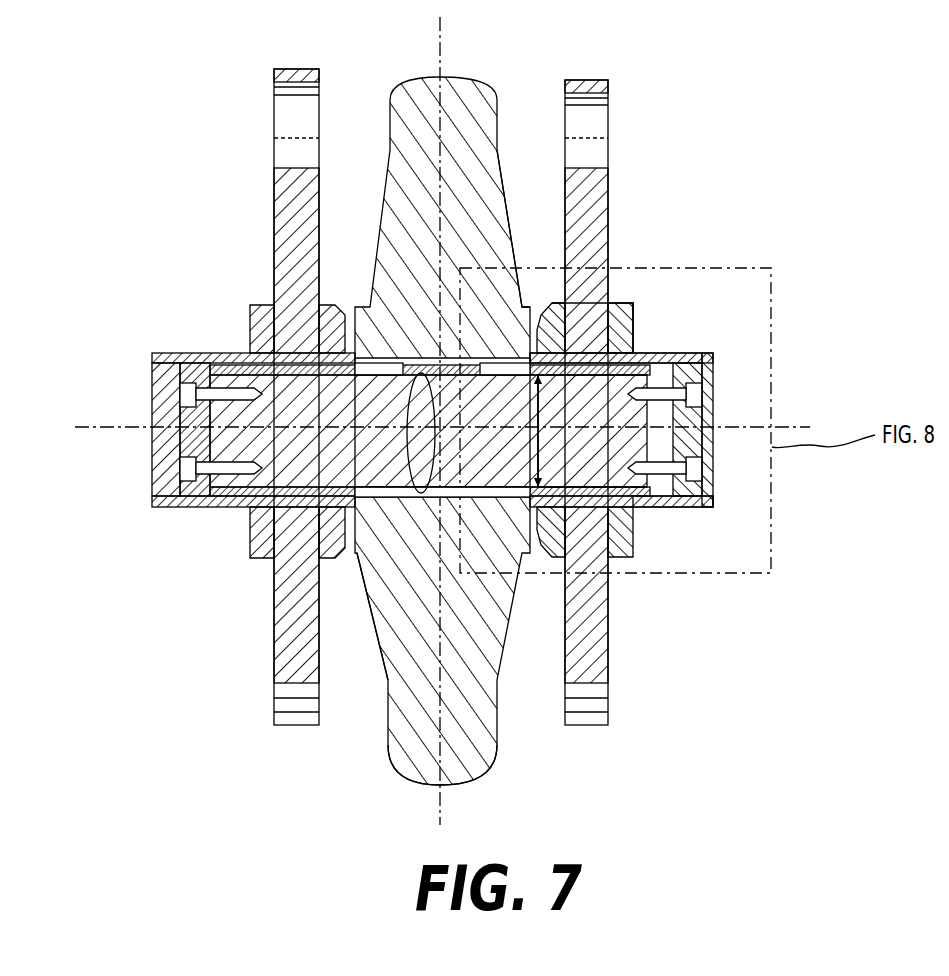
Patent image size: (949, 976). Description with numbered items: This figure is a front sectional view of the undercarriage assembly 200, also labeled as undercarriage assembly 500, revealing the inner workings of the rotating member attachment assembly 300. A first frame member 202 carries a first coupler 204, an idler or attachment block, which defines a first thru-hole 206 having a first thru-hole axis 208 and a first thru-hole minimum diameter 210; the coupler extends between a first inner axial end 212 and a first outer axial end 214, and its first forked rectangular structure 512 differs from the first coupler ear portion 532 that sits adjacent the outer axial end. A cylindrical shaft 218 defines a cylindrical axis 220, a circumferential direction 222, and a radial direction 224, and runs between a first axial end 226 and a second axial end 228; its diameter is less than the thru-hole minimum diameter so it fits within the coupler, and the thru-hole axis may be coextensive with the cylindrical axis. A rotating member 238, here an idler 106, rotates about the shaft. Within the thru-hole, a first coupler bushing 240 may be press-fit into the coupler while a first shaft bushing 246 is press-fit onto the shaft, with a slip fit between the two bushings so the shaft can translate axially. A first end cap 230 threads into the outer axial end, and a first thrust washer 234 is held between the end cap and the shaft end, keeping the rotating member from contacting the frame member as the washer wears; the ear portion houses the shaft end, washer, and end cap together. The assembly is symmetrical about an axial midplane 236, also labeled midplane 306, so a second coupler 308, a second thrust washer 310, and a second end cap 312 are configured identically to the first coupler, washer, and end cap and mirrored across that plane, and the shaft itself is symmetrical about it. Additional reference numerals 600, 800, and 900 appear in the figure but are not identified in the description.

The idler 106 is at (492, 647).
The undercarriage assembly 200 is at (621, 48).
The first frame member 202 is at (307, 110).
The first coupler 204 is at (648, 318).
The first thru-hole 206 is at (628, 355).
The first thru-hole axis 208 is at (810, 427).
The first thru-hole minimum diameter 210 is at (542, 402).
The first inner axial end 212 is at (522, 305).
The first outer axial end 214 is at (714, 356).
The shaft 218 is at (381, 466).
The cylindrical axis 220 is at (577, 432).
The circumferential direction 222 is at (427, 379).
The radial direction 224 is at (688, 455).
The first axial end 226 is at (681, 484).
The second axial end 228 is at (217, 448).
The first end cap 230 is at (710, 477).
The first thrust washer 234 is at (703, 423).
The axial midplane 236 is at (440, 47).
The rotating member 238 is at (419, 612).
The first coupler bushing 240 is at (603, 497).
The first shaft bushing 246 is at (539, 490).
The rotating member attachment assembly 300 is at (710, 66).
The axial midplane 306 is at (440, 800).
The second coupler 308 is at (257, 304).
The second thrust washer 310 is at (210, 500).
The second end cap 312 is at (150, 383).
The undercarriage assembly 500 is at (712, 121).
The first forked rectangular structure 512 is at (630, 296).
The first coupler ear portion 532 is at (692, 512).
The assembly 600 is at (751, 168).
The assembly 800 is at (754, 213).
The assembly 900 is at (770, 254).